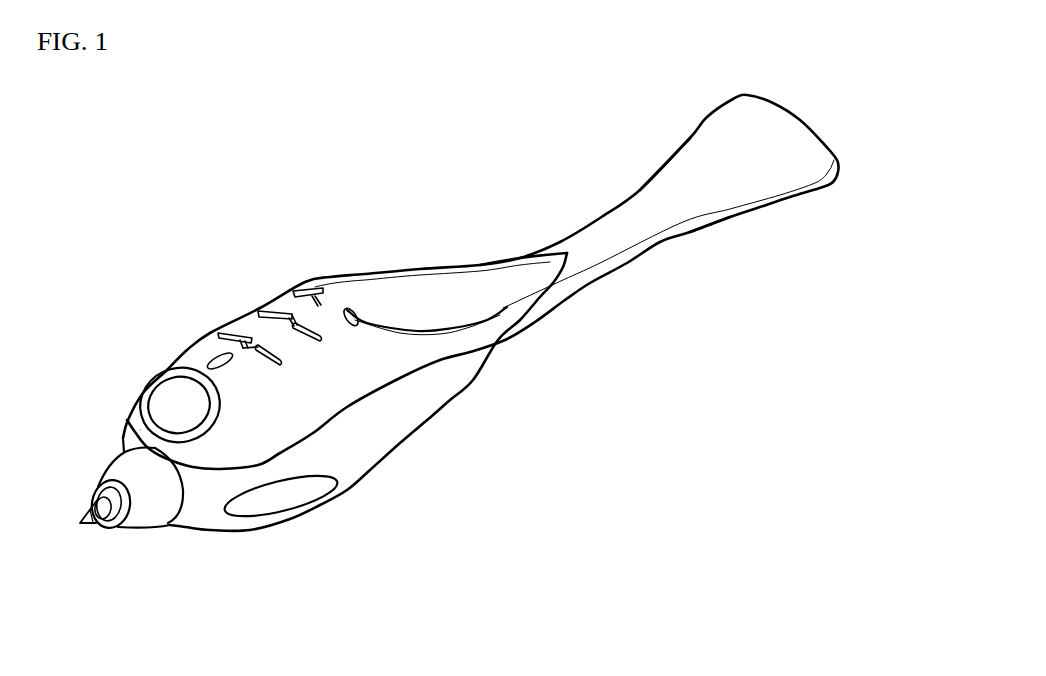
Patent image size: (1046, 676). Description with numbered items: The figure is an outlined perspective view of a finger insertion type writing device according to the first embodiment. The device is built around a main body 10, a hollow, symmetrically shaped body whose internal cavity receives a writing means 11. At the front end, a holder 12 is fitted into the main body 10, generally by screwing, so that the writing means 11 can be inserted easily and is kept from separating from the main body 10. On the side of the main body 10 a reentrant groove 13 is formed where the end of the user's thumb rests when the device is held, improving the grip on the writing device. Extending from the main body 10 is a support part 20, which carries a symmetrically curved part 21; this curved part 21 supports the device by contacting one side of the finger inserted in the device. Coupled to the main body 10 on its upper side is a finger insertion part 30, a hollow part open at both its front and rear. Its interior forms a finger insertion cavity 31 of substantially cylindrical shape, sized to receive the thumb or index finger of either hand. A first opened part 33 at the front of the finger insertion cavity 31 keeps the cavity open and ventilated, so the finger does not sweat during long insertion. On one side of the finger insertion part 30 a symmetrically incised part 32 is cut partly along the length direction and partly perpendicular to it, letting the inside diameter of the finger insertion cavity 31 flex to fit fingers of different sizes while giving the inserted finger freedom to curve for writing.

The main body 10 is at (420, 412).
The writing means 11 is at (98, 518).
The holder 12 is at (163, 503).
The reentrant groove 13 is at (285, 497).
The support part 20 is at (800, 168).
The symmetrically curved part 21 is at (623, 253).
The finger insertion part 30 is at (198, 347).
The finger insertion cavity 31 is at (428, 310).
The symmetrically incised part 32 is at (288, 322).
The first opened part 33 is at (175, 398).